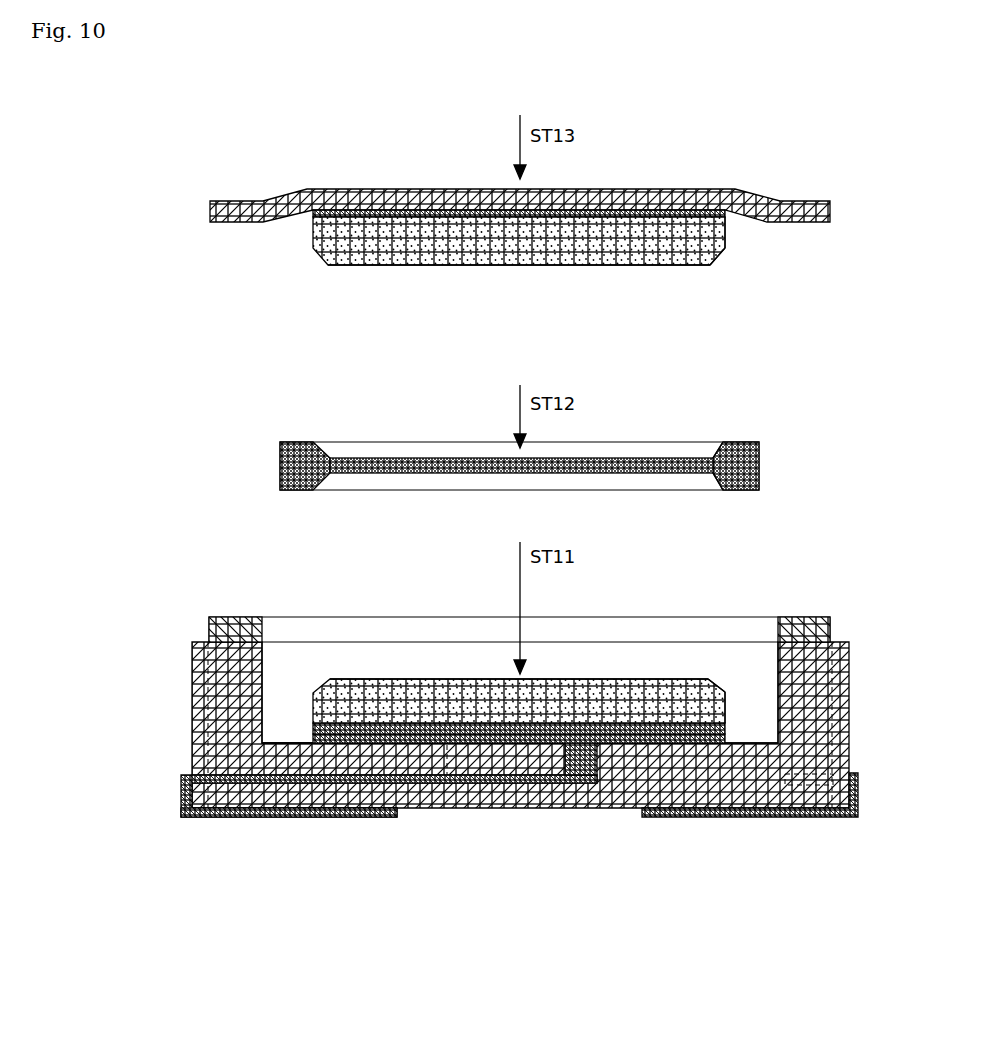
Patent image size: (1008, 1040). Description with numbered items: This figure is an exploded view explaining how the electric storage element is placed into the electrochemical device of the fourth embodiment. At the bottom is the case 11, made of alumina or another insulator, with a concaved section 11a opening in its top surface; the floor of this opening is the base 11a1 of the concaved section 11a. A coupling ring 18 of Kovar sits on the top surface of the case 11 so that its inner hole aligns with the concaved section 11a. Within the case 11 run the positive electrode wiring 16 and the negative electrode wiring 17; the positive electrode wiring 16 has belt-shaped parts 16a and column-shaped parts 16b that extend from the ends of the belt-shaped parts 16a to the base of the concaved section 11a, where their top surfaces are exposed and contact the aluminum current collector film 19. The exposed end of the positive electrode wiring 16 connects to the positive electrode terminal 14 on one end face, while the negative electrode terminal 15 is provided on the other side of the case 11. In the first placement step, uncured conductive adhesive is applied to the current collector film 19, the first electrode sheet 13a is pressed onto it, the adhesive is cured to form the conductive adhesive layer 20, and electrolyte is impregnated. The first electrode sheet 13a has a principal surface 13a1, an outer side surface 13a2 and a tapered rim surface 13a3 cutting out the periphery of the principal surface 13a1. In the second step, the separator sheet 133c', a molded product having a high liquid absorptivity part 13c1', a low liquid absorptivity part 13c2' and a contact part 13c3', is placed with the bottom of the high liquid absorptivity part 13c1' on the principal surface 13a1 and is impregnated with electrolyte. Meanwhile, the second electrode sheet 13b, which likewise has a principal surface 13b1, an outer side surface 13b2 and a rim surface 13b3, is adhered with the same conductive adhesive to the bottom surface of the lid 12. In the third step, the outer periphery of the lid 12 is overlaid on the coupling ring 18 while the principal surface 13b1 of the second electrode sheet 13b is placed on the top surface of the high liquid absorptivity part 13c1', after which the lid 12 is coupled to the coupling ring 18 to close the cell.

The lid 12 is at (210, 205).
The second electrode sheet 13b is at (411, 245).
The principal surface of second electrode sheet 13b1 is at (512, 266).
The outer side surface of second electrode sheet 13b2 is at (730, 237).
The rim surface of second electrode sheet 13b3 is at (718, 260).
The separator sheet 133c' is at (302, 429).
The high liquid absorptivity part 13c1' is at (521, 427).
The low liquid absorptivity part 13c2' is at (755, 438).
The contact part 13c3' is at (706, 461).
The coupling ring 18 is at (209, 626).
The case 11 is at (192, 690).
The concaved section 11a is at (277, 727).
The cavity bottom surface 11a1 is at (297, 745).
The first electrode sheet 13a is at (396, 690).
The principal surface of first electrode sheet 13a1 is at (600, 679).
The outer side surface of first electrode sheet 13a2 is at (728, 716).
The rim surface of first electrode sheet 13a3 is at (722, 688).
The positive electrode terminal 14 is at (200, 820).
The positive electrode wiring 16 is at (240, 783).
The belt-shaped part 16a is at (500, 784).
The column-shaped part 16b is at (448, 776).
The current collector film 19 is at (416, 745).
The conductive adhesive layer 20 is at (628, 733).
The negative electrode wiring 17 is at (810, 790).
The negative electrode terminal 15 is at (833, 818).